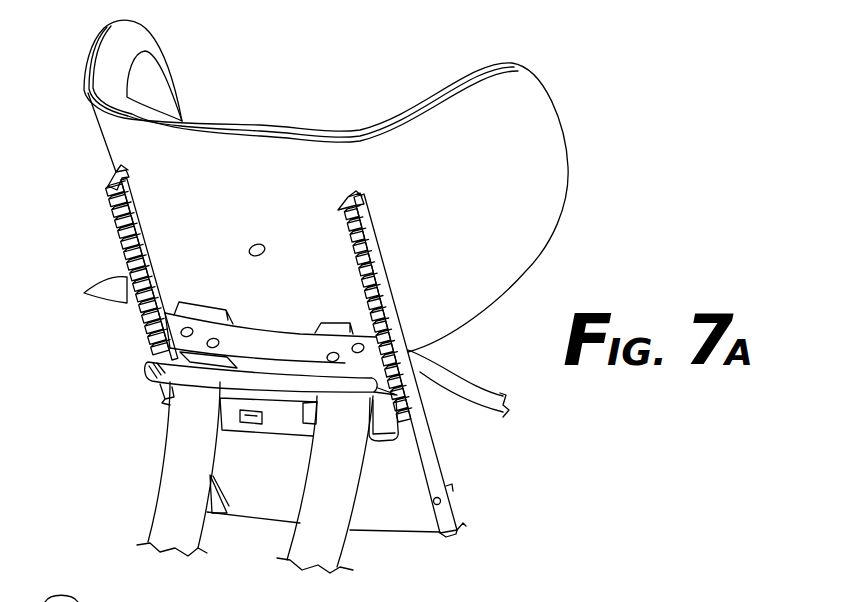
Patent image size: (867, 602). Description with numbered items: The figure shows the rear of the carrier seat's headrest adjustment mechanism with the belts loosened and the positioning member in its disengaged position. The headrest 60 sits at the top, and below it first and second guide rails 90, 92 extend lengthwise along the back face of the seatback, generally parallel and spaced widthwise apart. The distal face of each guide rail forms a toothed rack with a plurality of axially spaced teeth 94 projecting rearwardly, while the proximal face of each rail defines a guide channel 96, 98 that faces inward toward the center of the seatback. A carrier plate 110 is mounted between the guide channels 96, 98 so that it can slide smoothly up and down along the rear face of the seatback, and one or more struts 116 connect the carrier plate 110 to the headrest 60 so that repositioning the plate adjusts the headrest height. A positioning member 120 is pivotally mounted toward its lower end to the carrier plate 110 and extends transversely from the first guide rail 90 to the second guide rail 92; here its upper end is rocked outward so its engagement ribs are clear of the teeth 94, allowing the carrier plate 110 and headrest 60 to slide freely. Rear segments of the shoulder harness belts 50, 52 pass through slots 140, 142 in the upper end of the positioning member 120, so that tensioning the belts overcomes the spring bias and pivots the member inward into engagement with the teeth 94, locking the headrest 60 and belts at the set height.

The headrest 60 is at (530, 116).
The guide channel 96 is at (122, 178).
The first guide rail 90 is at (136, 218).
The guide channel 98 is at (346, 199).
The second guide rail 92 is at (370, 250).
The struts 116 is at (204, 312).
The carrier plate 110 is at (271, 354).
The teeth 94 is at (86, 293).
The slot 142 is at (170, 397).
The positioning member 120 is at (288, 420).
The slot 140 is at (386, 441).
The shoulder harness belt 52 is at (177, 520).
The shoulder harness belt 50 is at (332, 540).